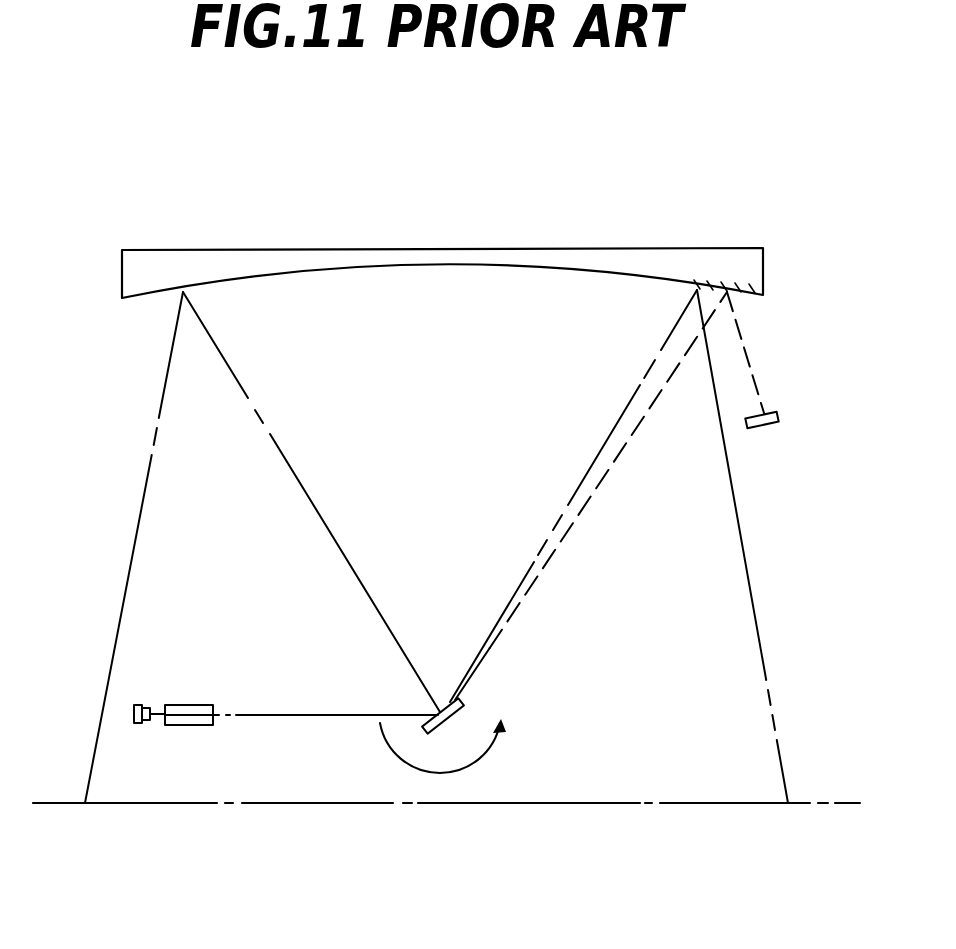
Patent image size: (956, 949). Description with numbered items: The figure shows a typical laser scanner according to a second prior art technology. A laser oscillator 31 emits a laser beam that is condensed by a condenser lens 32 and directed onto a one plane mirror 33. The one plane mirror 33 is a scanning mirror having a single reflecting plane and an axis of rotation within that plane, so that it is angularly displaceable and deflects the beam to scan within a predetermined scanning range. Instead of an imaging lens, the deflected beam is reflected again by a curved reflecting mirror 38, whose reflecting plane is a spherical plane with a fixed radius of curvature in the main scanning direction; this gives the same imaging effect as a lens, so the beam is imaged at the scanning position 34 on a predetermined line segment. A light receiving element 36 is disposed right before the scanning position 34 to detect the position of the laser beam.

The laser oscillator 31 is at (138, 704).
The condenser lens 32 is at (192, 704).
The one plane mirror 33 is at (455, 703).
The scanning position 34 is at (605, 802).
The light receiving element 36 is at (778, 410).
The curved reflecting mirror 38 is at (215, 268).